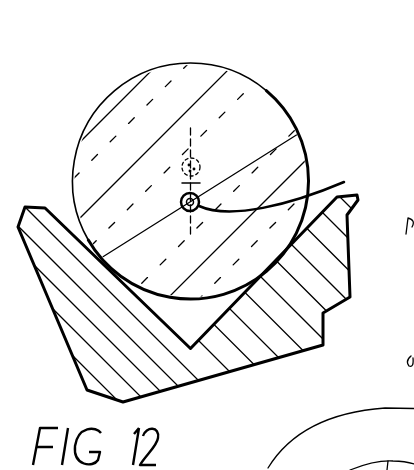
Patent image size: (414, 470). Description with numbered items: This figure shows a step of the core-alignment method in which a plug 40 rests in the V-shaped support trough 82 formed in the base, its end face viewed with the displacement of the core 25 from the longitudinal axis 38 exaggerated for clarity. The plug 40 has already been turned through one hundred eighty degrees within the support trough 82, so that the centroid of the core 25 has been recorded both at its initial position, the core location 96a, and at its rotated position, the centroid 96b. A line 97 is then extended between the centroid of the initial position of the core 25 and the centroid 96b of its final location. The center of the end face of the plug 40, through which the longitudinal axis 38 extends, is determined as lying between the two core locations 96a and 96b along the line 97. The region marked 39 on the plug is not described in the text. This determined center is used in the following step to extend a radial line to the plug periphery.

The V-shaped support trough 82 is at (70, 333).
The cylindrical roller 39 is at (115, 102).
The plug 40 is at (173, 72).
The longitudinal axis 38 is at (188, 183).
The line 97 is at (188, 184).
The core location 96a is at (193, 161).
The core 25 is at (198, 194).
The centroid of the core in rotated position 96b is at (300, 190).